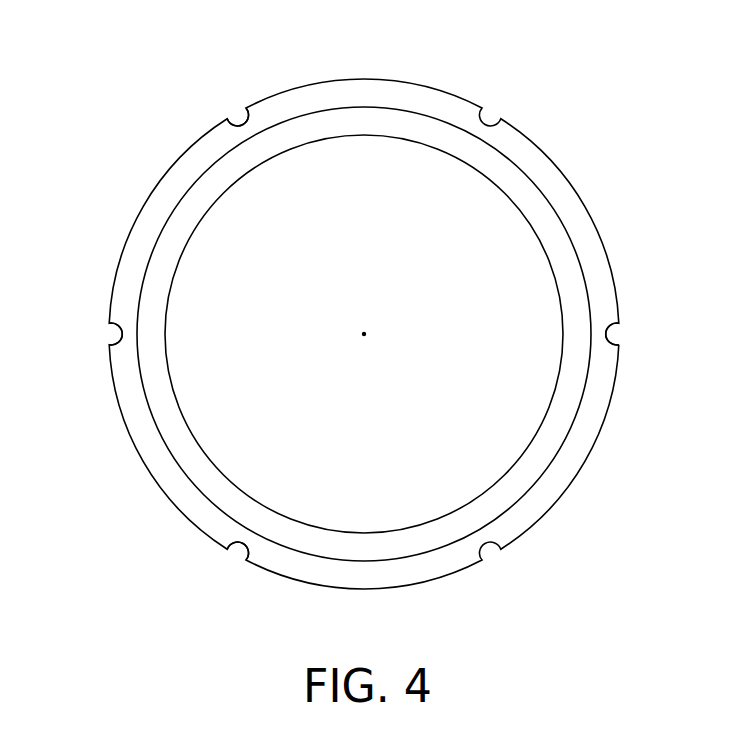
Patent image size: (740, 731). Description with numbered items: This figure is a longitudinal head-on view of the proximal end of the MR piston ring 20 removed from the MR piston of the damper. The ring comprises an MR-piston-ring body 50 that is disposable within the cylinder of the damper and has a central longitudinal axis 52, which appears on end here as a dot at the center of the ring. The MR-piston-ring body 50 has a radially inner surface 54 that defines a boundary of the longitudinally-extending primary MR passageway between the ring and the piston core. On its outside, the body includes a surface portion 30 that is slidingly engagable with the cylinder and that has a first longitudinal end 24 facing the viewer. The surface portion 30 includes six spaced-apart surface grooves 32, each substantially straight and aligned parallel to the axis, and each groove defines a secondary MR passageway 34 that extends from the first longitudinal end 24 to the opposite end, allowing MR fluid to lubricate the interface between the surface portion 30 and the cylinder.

The MR piston ring 20 is at (580, 116).
The first longitudinal end 24 is at (608, 290).
The surface portion 30 is at (585, 210).
The surface groove 32 is at (237, 124).
The secondary MR passageway 34 is at (108, 336).
The MR-piston-ring body 50 is at (359, 70).
The central longitudinal axis 52 is at (364, 334).
The radially inner surface 54 is at (535, 433).